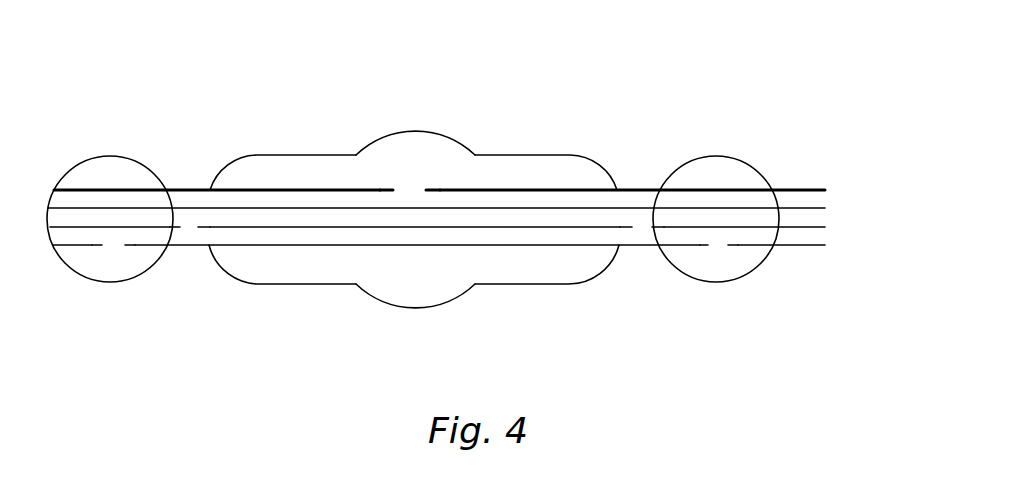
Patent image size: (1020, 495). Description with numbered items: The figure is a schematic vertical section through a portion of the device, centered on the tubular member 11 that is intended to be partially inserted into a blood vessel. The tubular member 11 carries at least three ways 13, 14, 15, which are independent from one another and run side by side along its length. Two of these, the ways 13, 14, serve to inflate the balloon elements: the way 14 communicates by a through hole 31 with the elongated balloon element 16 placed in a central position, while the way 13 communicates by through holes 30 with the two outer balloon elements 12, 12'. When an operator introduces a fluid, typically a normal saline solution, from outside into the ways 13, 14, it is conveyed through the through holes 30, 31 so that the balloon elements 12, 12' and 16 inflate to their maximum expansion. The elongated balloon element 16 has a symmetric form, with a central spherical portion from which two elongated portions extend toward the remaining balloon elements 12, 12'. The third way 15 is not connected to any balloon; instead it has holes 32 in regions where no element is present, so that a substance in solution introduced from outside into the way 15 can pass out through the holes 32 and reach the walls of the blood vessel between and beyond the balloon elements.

The tubular member 11 is at (292, 171).
The balloon element 12 is at (110, 189).
The balloon element 12' is at (716, 182).
The way 13 is at (809, 235).
The way 14 is at (809, 202).
The way 15 is at (807, 218).
The elongated balloon element 16 is at (443, 152).
The through hole 30 is at (110, 245).
The through hole 31 is at (407, 190).
The hole 32 is at (190, 227).